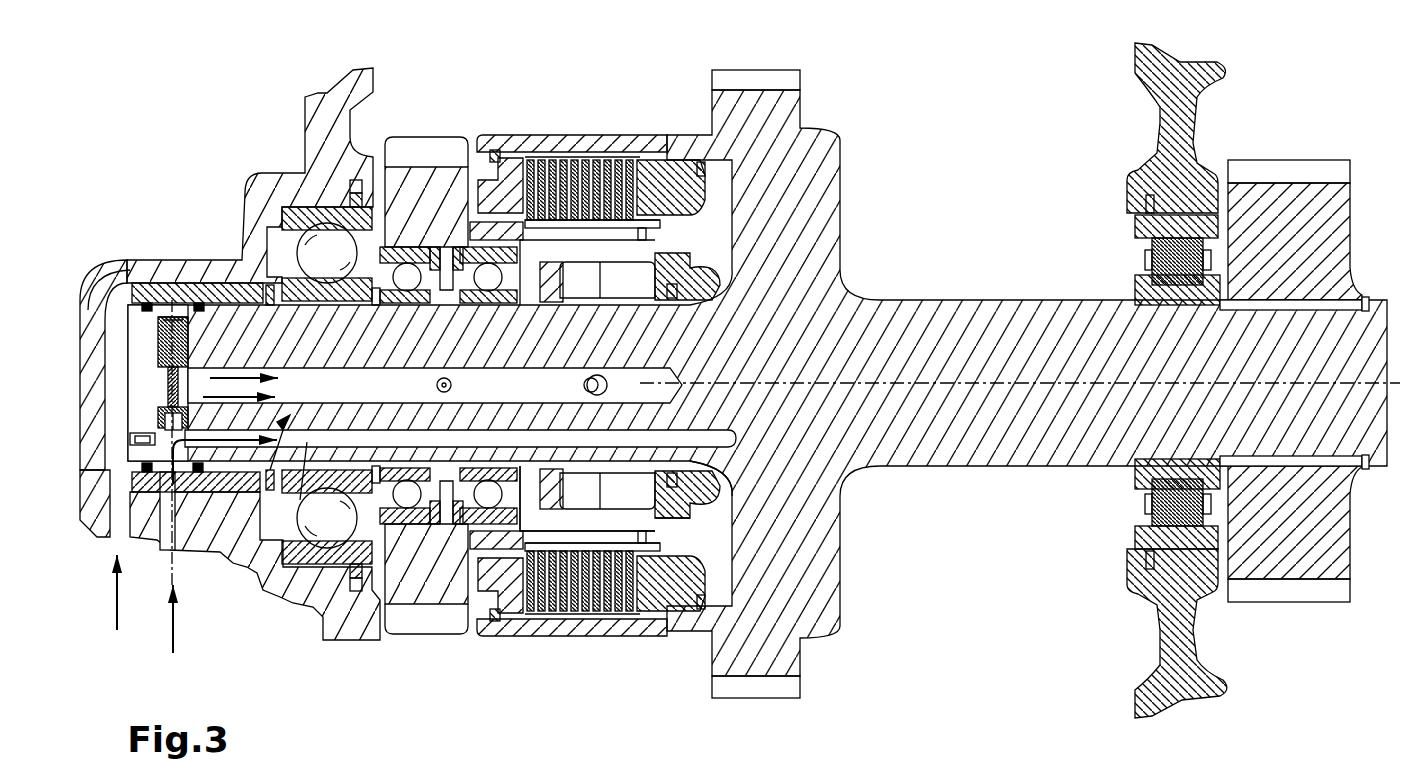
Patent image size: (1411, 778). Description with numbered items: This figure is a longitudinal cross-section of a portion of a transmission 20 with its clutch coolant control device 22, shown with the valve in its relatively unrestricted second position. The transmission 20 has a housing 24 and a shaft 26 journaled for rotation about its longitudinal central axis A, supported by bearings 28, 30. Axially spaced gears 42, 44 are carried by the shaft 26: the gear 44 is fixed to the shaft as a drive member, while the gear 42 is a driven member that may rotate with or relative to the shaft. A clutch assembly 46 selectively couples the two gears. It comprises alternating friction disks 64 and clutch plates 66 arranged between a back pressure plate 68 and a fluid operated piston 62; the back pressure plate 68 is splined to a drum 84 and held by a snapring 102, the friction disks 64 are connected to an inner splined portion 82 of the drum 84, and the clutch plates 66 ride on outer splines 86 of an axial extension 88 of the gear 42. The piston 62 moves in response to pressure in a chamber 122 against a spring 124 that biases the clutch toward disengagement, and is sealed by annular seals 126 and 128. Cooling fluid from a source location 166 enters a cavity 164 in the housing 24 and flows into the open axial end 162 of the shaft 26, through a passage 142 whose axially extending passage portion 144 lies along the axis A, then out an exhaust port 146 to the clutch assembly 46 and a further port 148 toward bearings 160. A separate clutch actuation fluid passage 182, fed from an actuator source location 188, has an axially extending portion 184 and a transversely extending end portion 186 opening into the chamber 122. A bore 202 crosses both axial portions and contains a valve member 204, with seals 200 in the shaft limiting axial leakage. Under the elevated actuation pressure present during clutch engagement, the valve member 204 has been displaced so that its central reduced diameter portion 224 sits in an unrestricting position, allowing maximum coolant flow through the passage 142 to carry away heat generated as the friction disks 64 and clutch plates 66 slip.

The transmission 20 is at (757, 339).
The clutch coolant control device 22 is at (152, 345).
The housing 24 is at (265, 200).
The shaft 26 is at (912, 338).
The bearing 28 is at (302, 212).
The bearing 30 is at (1120, 243).
The gear 42 is at (455, 160).
The gear 44 is at (733, 78).
The clutch assembly 46 is at (650, 182).
The piston 62 is at (678, 588).
The friction disks 64 is at (606, 160).
The clutch plates 66 is at (625, 160).
The back pressure plate 68 is at (524, 160).
The inner splined portion 82 is at (505, 150).
The drum 84 is at (584, 135).
The outer splines 86 is at (655, 216).
The axial extension 88 is at (677, 233).
The snapring 102 is at (498, 160).
The chamber 122 is at (722, 495).
The spring 124 is at (647, 500).
The annular seal 126 is at (703, 600).
The annular seal 128 is at (730, 480).
The passage 142 is at (283, 432).
The axially extending passage portion 144 is at (473, 401).
The exhaust port 146 is at (588, 390).
The port 148 is at (436, 388).
The bearings 160 is at (488, 500).
The open axial end 162 is at (140, 330).
The cavity 164 is at (100, 505).
The source location 166 is at (118, 628).
The clutch actuation fluid passage 182 is at (240, 450).
The axially extending portion 184 is at (307, 440).
The transversely extending end portion 186 is at (725, 466).
The fluid operated actuator source location 188 is at (175, 640).
The seals 200 is at (205, 300).
The bore 202 is at (118, 350).
The valve member 204 is at (190, 433).
The central reduced diameter portion 224 is at (188, 333).
The longitudinal central axis A is at (1375, 338).